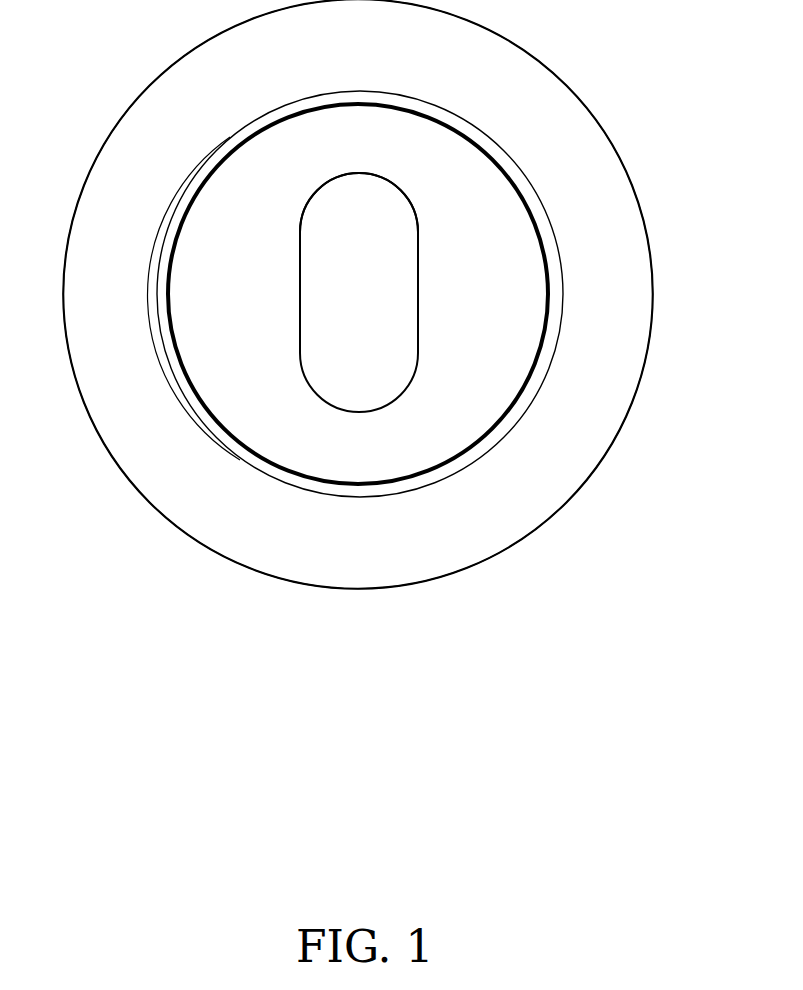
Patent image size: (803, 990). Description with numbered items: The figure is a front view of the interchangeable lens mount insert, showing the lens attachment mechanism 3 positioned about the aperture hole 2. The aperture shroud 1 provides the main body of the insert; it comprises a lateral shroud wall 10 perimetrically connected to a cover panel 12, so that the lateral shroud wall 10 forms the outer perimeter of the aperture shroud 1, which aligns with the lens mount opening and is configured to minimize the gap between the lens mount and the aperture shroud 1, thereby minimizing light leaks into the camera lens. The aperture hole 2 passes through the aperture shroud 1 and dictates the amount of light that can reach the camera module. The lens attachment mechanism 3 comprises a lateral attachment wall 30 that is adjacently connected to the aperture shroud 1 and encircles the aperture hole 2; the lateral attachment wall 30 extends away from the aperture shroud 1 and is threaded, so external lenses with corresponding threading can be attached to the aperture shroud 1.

The aperture shroud 1 is at (617, 23).
The lateral shroud wall 10 is at (533, 532).
The lens attachment mechanism 3 is at (126, 302).
The lateral attachment wall 30 is at (188, 393).
The aperture hole 2 is at (342, 386).
The cover panel 12 is at (322, 172).